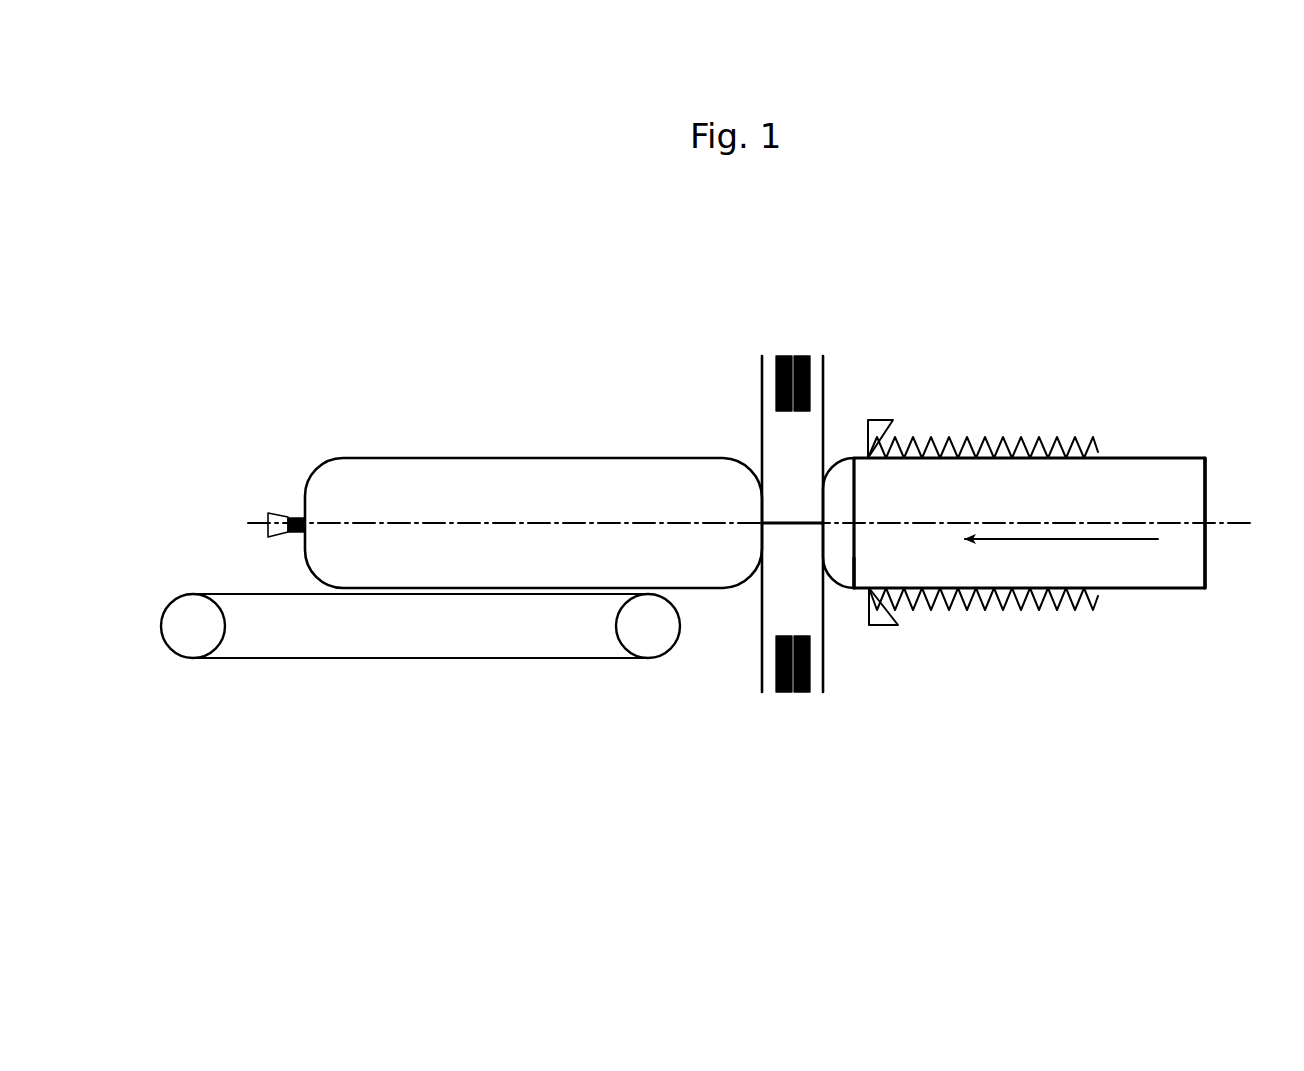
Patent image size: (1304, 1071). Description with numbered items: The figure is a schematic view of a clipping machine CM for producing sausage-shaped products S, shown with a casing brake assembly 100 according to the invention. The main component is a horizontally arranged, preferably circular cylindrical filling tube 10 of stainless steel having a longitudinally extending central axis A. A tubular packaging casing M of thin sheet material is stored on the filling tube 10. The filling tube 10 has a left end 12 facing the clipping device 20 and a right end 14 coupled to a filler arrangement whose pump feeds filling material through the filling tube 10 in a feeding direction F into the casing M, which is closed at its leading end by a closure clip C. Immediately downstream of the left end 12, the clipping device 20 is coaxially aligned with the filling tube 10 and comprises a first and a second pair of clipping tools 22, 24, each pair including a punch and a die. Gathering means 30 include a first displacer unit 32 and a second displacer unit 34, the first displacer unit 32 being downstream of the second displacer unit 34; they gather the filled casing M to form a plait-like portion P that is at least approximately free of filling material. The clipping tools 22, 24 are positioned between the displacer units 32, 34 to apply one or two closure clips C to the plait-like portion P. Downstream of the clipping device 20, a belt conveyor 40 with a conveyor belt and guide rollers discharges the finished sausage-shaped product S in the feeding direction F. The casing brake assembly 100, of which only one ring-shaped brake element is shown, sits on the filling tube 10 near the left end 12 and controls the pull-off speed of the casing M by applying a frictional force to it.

The filling tube 10 is at (1046, 517).
The left end 12 is at (858, 552).
The right end 14 is at (1205, 490).
The clipping device 20 is at (745, 523).
The first pair of clipping tools 22 is at (801, 636).
The second pair of clipping tools 24 is at (786, 411).
The gathering means 30 is at (855, 581).
The first displacer unit 32 is at (824, 605).
The second displacer unit 34 is at (765, 583).
The belt conveyor 40 is at (495, 672).
The casing brake assembly 100 is at (893, 420).
The central axis A is at (1220, 522).
The closure clip C is at (288, 518).
The clipping machine CM is at (955, 302).
The feeding direction F is at (1061, 556).
The tubular packaging casing M is at (1053, 437).
The plait-like portion P is at (802, 522).
The sausage-shaped product S is at (507, 457).